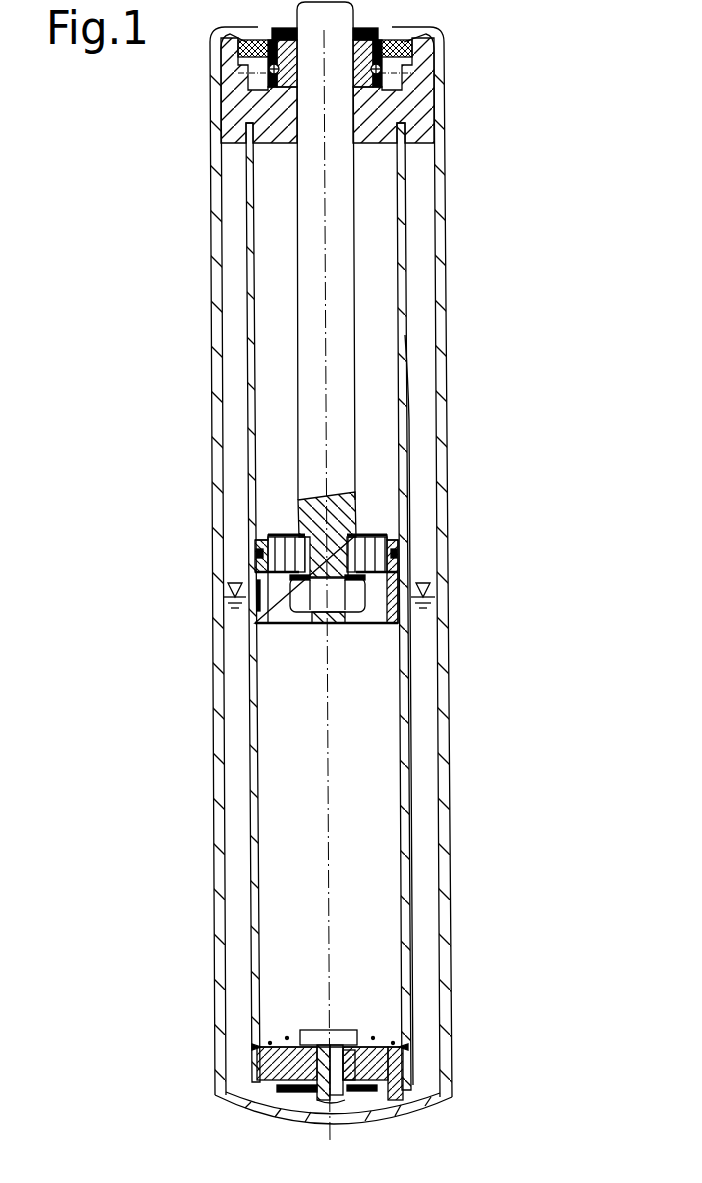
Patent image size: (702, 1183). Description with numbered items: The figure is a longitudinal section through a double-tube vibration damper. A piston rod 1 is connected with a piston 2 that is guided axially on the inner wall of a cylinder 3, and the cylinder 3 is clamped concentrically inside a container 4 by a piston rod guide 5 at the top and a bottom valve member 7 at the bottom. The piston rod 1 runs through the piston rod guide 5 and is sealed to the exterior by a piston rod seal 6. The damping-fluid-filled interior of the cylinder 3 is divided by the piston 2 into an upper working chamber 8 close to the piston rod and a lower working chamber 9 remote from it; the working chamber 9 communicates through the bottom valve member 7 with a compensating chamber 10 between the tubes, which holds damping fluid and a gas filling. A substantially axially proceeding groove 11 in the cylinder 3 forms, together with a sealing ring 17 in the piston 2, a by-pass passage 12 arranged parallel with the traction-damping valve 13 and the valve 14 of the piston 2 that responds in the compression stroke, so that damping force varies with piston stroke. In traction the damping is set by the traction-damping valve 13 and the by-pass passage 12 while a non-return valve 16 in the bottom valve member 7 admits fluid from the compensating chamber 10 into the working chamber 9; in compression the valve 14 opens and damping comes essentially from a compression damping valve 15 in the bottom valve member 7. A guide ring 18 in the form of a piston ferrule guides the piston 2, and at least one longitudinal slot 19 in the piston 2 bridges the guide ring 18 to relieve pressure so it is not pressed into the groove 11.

The piston rod 1 is at (342, 186).
The piston 2 is at (331, 572).
The cylinder 3 is at (400, 289).
The container 4 is at (440, 336).
The piston rod guide 5 is at (422, 93).
The piston rod seal 6 is at (412, 46).
The bottom valve member 7 is at (319, 1070).
The upper working chamber 8 is at (383, 232).
The working chamber remote from the piston rod 9 is at (383, 740).
The compensating chamber 10 is at (326, 631).
The axially proceeding groove 11 is at (398, 403).
The by-pass passage 12 is at (398, 566).
The traction-damping valve 13 is at (260, 575).
The valve 14 is at (284, 536).
The compression damping valve 15 is at (348, 1107).
The non-return valve 16 is at (385, 1044).
The sealing ring 17 is at (258, 553).
The guide ring 18 is at (224, 592).
The longitudinal slot 19 is at (263, 612).